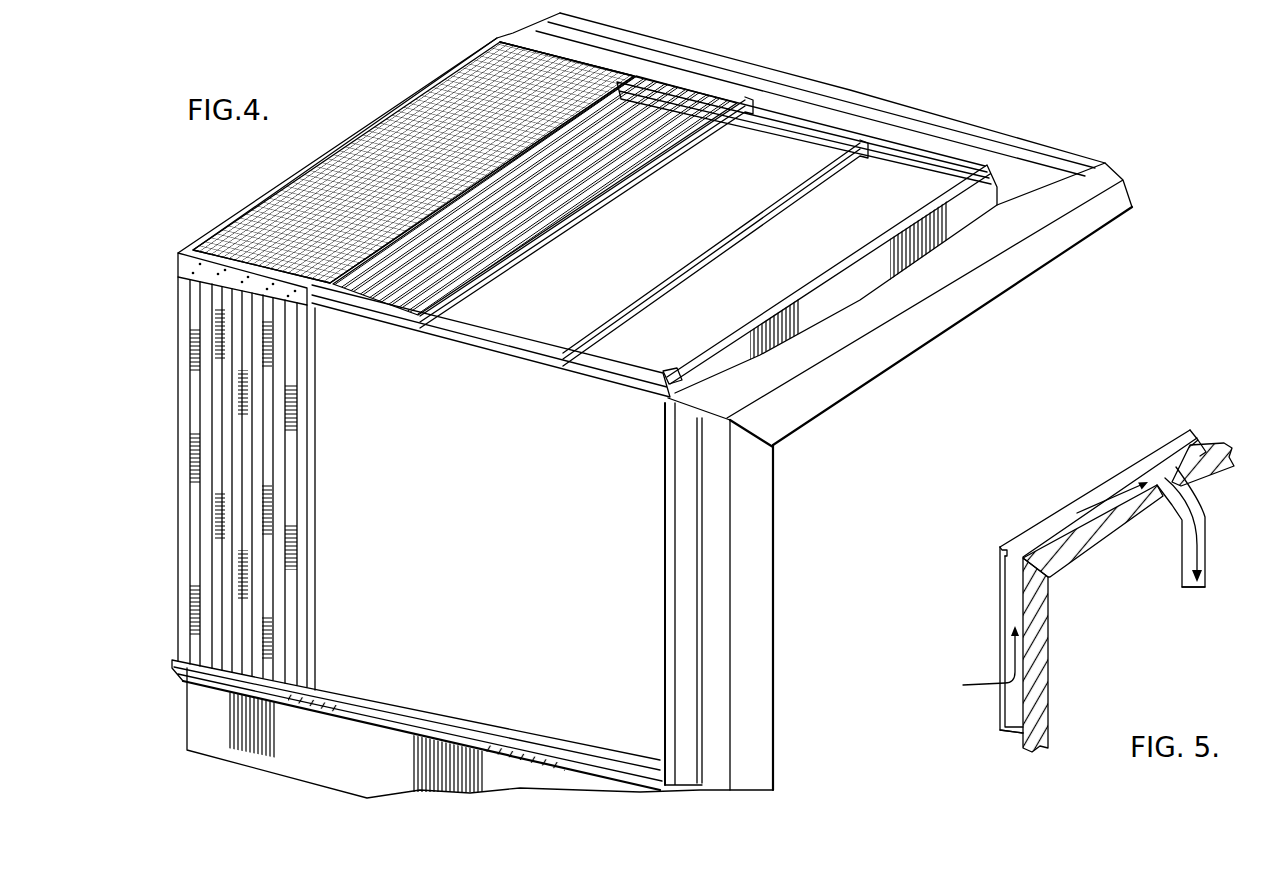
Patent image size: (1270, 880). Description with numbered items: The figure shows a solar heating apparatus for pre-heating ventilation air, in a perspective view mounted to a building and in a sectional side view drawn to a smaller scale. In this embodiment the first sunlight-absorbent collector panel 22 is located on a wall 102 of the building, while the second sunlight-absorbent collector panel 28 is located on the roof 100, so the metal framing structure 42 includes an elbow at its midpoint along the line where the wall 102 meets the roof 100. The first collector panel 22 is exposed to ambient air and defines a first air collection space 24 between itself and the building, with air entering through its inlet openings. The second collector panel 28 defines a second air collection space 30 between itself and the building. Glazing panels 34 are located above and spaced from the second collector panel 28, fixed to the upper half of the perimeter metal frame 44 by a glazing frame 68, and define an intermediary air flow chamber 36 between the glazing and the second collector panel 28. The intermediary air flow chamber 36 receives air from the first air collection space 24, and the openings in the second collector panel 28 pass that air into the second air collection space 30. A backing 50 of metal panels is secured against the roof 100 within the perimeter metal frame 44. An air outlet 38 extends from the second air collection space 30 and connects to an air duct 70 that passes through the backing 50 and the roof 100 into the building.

In FIG. 4, the first sunlight-absorbent collector panel 22 is at (220, 423).
In FIG. 5, the first sunlight-absorbent collector panel 22 is at (997, 612).
In FIG. 5, the first air collection space 24 is at (1013, 708).
In FIG. 4, the second sunlight-absorbent collector panel 28 is at (370, 150).
In FIG. 5, the second sunlight-absorbent collector panel 28 is at (1103, 480).
In FIG. 5, the second air collection space 30 is at (1197, 436).
In FIG. 4, the glazing panels 34 is at (420, 110).
In FIG. 5, the intermediary air flow chamber 36 is at (1033, 540).
In FIG. 5, the air outlet 38 is at (1190, 503).
In FIG. 4, the metal framing structure 42 is at (690, 373).
In FIG. 4, the perimeter metal frame 44 is at (800, 115).
In FIG. 4, the backing 50 is at (893, 197).
In FIG. 4, the glazing frame 68 is at (660, 82).
In FIG. 5, the air duct 70 is at (1202, 527).
In FIG. 4, the roof 100 is at (938, 317).
In FIG. 5, the roof 100 is at (1083, 547).
In FIG. 4, the wall 102 is at (767, 690).
In FIG. 5, the wall 102 is at (1047, 683).